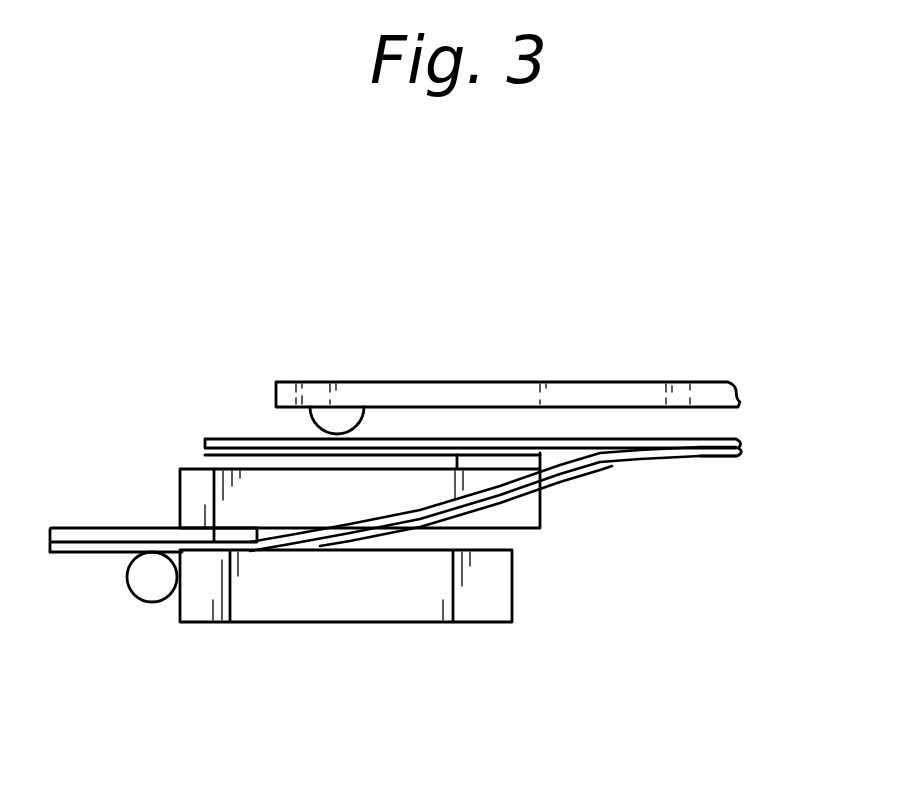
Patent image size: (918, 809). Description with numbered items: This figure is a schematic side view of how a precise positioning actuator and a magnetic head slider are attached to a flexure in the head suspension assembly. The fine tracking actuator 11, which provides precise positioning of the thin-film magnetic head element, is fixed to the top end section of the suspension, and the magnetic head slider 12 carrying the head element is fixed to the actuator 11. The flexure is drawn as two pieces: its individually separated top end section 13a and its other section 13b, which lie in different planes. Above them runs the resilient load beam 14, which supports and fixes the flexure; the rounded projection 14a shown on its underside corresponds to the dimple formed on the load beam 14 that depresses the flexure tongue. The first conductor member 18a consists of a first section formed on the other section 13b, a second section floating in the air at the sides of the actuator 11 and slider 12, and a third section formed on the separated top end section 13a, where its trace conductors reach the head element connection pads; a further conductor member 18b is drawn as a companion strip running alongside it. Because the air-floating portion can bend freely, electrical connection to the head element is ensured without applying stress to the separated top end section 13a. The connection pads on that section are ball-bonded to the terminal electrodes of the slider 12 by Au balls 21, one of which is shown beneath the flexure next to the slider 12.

The fine tracking actuator 11 is at (538, 506).
The magnetic head slider 12 is at (412, 600).
The top end section of the flexure 13a is at (80, 537).
The other section of the flexure 13b is at (684, 442).
The load beam 14 is at (551, 386).
The projection of pressing bar 14a is at (332, 424).
The first conductor member 18a is at (90, 555).
The upper contact strip 18b is at (590, 461).
The Au balls 21 is at (150, 582).